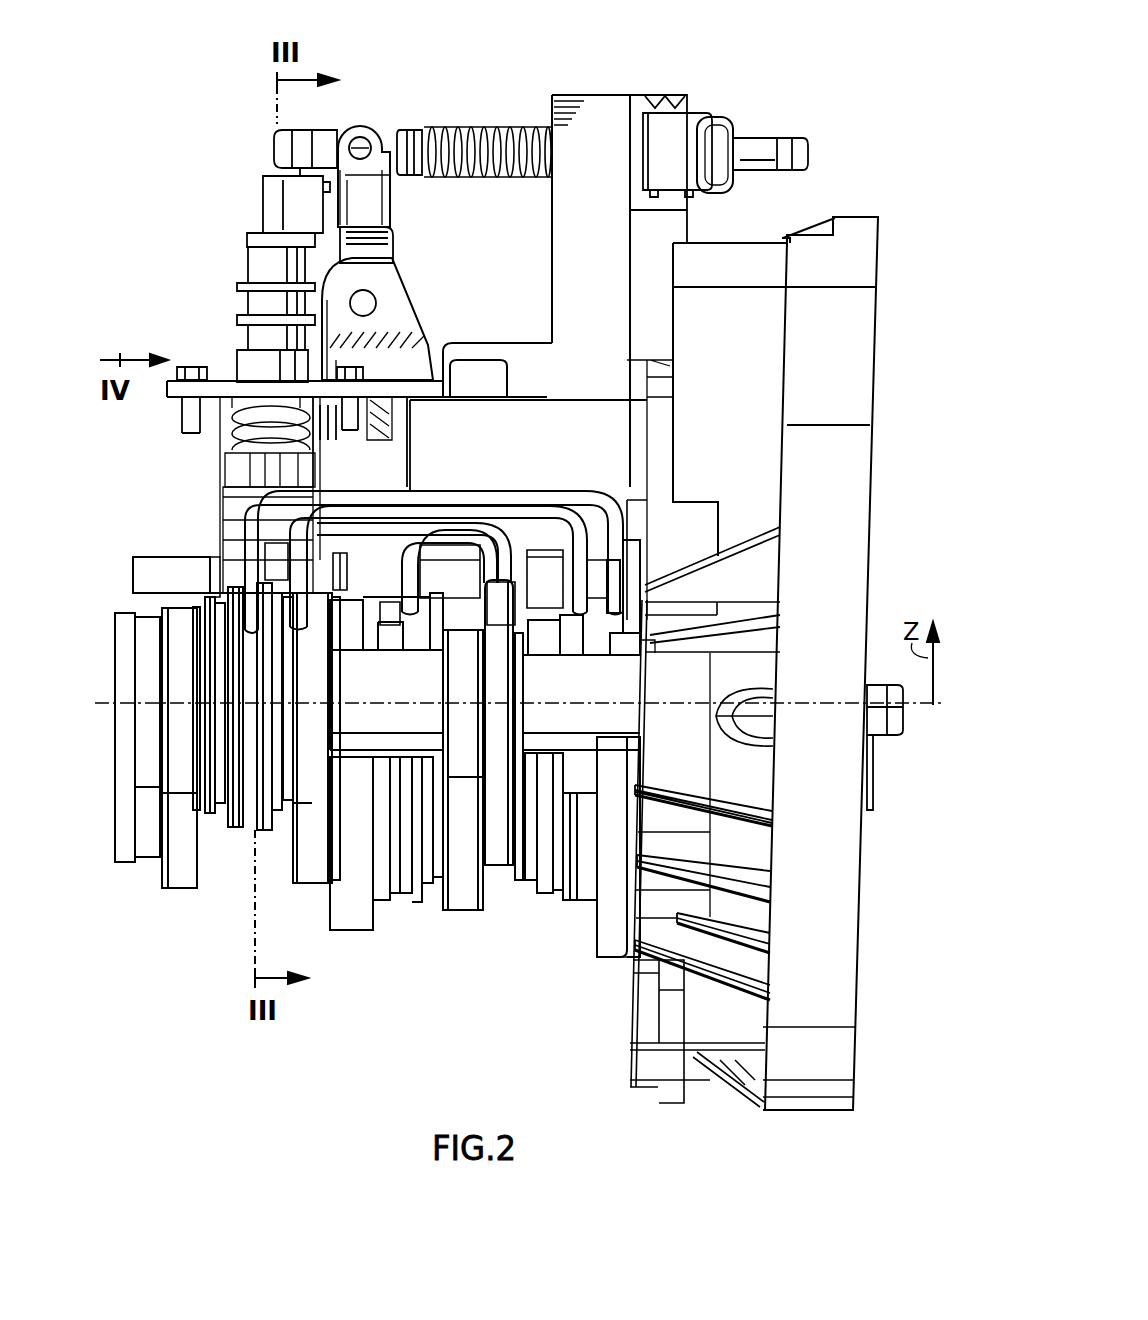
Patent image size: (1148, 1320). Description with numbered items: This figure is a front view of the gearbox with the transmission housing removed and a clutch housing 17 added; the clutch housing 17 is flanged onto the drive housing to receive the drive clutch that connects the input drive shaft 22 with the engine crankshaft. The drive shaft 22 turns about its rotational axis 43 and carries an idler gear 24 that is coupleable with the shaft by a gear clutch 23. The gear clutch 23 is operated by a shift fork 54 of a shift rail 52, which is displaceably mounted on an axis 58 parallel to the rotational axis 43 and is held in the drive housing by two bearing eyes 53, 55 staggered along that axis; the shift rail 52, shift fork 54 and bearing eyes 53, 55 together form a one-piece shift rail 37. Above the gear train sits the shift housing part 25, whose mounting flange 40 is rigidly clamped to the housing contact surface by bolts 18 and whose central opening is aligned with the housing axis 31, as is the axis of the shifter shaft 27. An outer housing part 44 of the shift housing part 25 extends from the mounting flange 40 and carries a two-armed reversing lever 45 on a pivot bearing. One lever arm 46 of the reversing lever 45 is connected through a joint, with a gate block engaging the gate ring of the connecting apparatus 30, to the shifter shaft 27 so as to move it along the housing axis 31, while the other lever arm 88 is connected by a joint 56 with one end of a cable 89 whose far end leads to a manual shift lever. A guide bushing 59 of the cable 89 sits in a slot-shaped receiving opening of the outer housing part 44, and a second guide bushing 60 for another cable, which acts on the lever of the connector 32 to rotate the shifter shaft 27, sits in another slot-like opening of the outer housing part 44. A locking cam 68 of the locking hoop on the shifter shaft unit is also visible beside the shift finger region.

The clutch housing 17 is at (852, 200).
The bolts 18 is at (178, 360).
The drive shaft 22 is at (401, 681).
The gear clutch 23 is at (262, 838).
The idler gear 24 is at (312, 806).
The shift housing part 25 is at (580, 84).
The shifter shaft 27 is at (226, 298).
The connecting apparatus 30 is at (238, 258).
The housing axis 31 is at (277, 150).
The connector 32 is at (256, 181).
The one-piece shift rail 37 is at (448, 472).
The mounting flange 40 is at (222, 370).
The rotational axis 43 is at (108, 694).
The outer housing part 44 is at (493, 326).
The reversing lever 45 is at (404, 256).
The lever arm 46 is at (396, 262).
The shift rail 52 is at (518, 472).
The bearing eye 53 is at (262, 600).
The shift fork 54 is at (238, 590).
The bearing eye 55 is at (628, 552).
The joint 56 is at (374, 114).
The axis 58 is at (130, 564).
The guide bushing 59 is at (685, 164).
The guide bushing 60 is at (720, 116).
The locking cam 68 is at (270, 477).
The lever arm 88 is at (378, 192).
The cable 89 is at (474, 112).